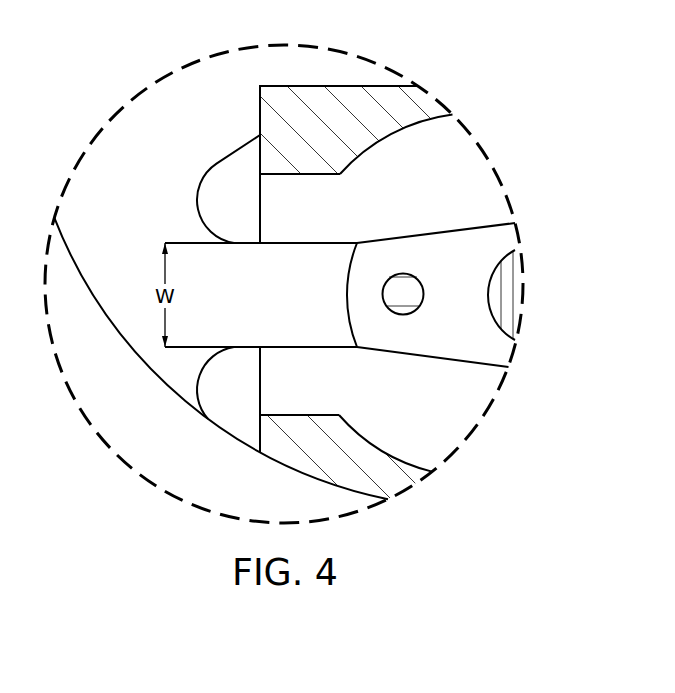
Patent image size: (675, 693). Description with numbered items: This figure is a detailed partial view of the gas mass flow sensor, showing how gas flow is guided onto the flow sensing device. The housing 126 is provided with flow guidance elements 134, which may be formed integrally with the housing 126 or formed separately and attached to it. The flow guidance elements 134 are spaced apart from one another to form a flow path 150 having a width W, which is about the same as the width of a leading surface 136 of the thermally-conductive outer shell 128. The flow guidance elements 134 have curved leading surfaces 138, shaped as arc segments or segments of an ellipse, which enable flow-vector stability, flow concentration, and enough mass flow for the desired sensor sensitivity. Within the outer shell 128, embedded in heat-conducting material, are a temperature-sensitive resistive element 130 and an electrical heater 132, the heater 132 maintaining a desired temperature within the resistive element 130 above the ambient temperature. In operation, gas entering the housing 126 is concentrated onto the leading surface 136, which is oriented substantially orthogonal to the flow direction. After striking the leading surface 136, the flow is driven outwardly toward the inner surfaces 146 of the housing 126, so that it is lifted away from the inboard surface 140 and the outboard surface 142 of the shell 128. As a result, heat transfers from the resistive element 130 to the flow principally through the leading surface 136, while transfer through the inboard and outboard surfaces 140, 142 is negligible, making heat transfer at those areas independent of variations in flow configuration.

The housing 126 is at (258, 108).
The thermally-conductive outer shell 128 is at (394, 295).
The temperature-sensitive resistive element 130 is at (421, 278).
The electrical heater 132 is at (488, 309).
The flow guidance elements 134 is at (220, 158).
The leading surface 136 is at (347, 297).
The curved leading surfaces 138 is at (197, 202).
The inboard surface 140 is at (383, 233).
The outboard surface 142 is at (388, 354).
The inner surfaces 146 is at (436, 117).
The flow path 150 is at (232, 284).